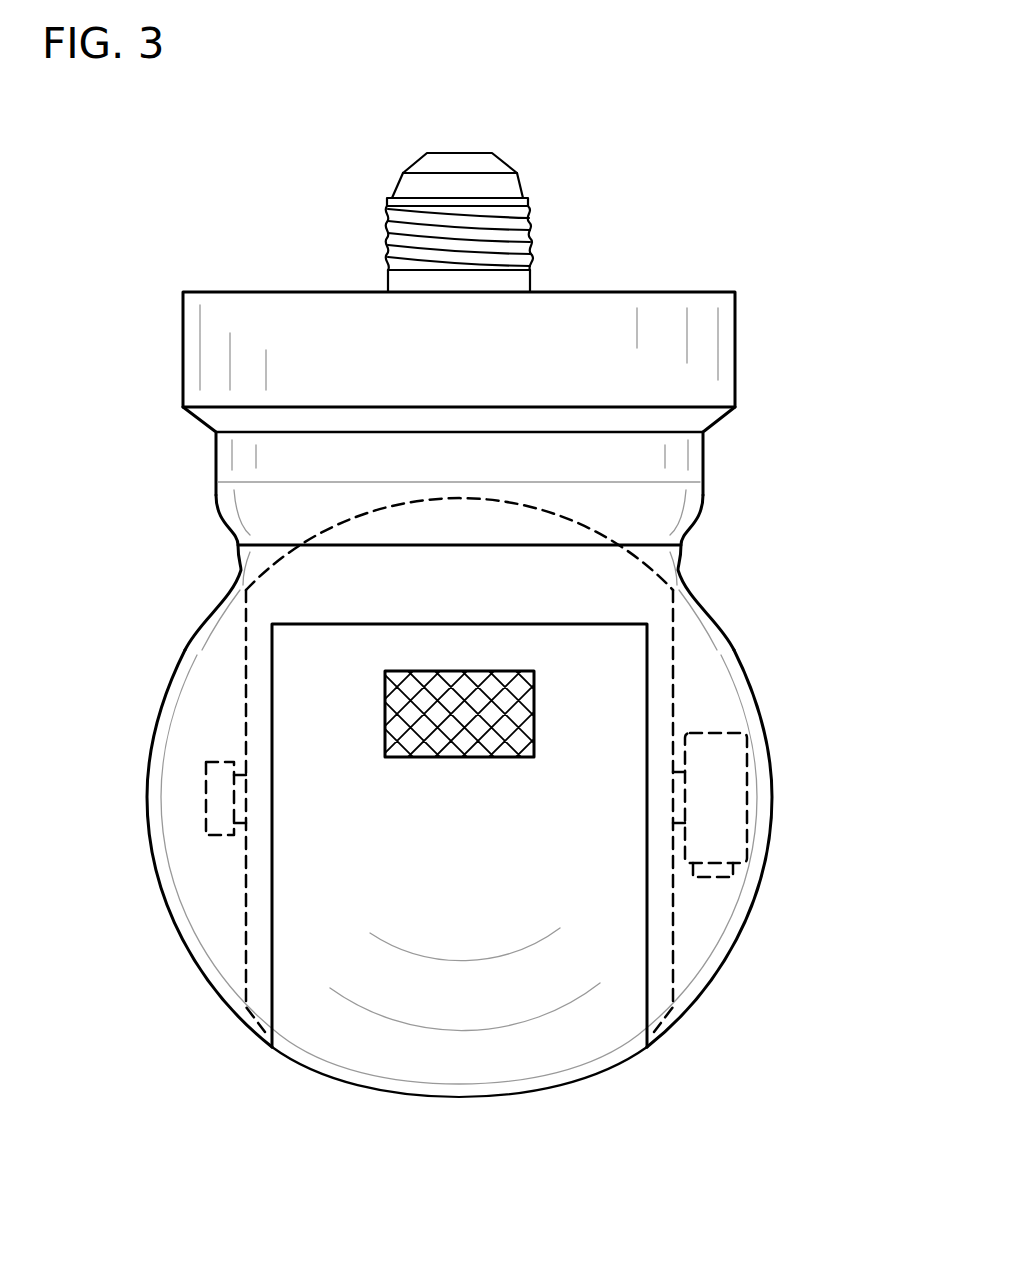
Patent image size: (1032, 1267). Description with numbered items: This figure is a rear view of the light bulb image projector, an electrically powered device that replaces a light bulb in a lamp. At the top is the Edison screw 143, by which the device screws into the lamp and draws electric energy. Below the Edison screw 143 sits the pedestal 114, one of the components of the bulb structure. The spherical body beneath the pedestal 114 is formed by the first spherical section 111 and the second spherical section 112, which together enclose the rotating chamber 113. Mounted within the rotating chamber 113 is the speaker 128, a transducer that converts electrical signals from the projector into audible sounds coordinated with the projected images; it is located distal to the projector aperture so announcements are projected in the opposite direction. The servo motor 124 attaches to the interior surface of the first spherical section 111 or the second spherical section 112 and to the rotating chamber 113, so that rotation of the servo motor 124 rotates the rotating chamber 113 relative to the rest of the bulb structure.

The Edison screw 143 is at (523, 222).
The pedestal 114 is at (705, 350).
The first spherical section 111 is at (712, 698).
The second spherical section 112 is at (212, 918).
The rotating chamber 113 is at (540, 1042).
The servo motor 124 is at (725, 795).
The speaker 128 is at (534, 710).